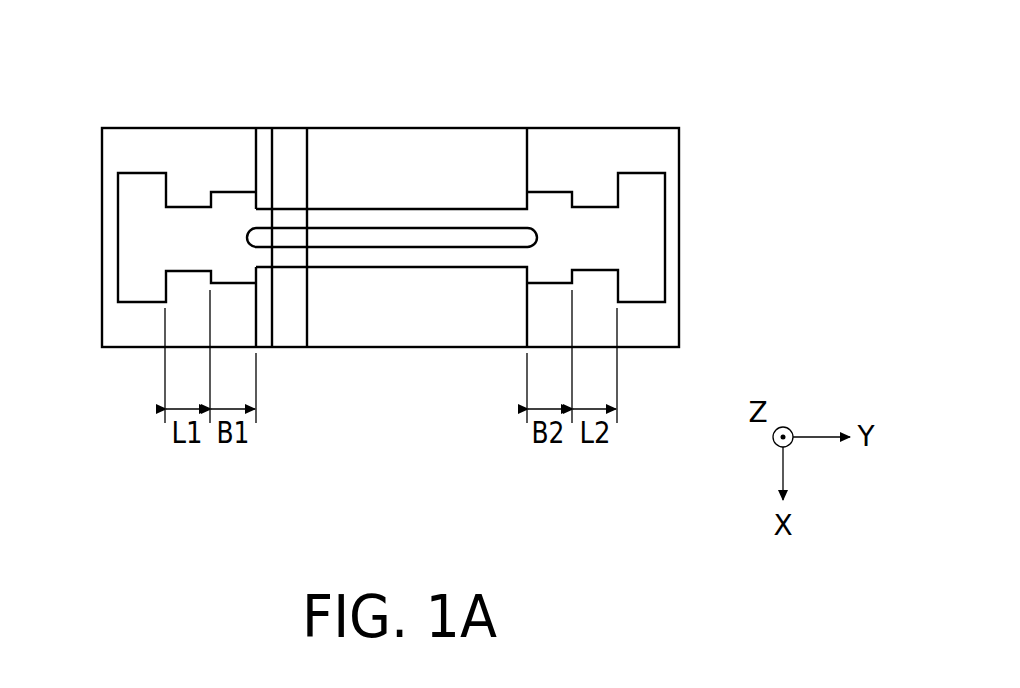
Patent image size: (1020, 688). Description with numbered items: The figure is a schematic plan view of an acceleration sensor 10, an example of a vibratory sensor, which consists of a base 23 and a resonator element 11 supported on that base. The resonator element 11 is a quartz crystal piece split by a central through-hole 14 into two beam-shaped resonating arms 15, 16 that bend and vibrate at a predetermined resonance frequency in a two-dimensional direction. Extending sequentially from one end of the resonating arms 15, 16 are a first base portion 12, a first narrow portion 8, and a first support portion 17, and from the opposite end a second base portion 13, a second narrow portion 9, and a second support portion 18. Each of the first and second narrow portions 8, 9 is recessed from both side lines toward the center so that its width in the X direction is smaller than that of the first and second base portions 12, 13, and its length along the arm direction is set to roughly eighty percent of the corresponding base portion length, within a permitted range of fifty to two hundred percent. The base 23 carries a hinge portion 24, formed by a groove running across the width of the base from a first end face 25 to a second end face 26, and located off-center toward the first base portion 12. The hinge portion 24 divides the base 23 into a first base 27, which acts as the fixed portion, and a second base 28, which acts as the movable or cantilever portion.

The first narrow portion 8 is at (186, 225).
The second narrow portion 9 is at (597, 223).
The acceleration sensor 10 is at (726, 68).
The resonator element 11 is at (456, 186).
The first base portion 12 is at (231, 224).
The second base portion 13 is at (548, 220).
The through-hole 14 is at (359, 232).
The resonating arm 15 is at (411, 217).
The resonating arm 16 is at (411, 257).
The first support portion 17 is at (140, 192).
The second support portion 18 is at (642, 190).
The base 23 is at (471, 360).
The hinge portion 24 is at (287, 333).
The first end face 25 is at (322, 128).
The second end face 26 is at (343, 348).
The first base 27 is at (100, 330).
The second base 28 is at (679, 323).